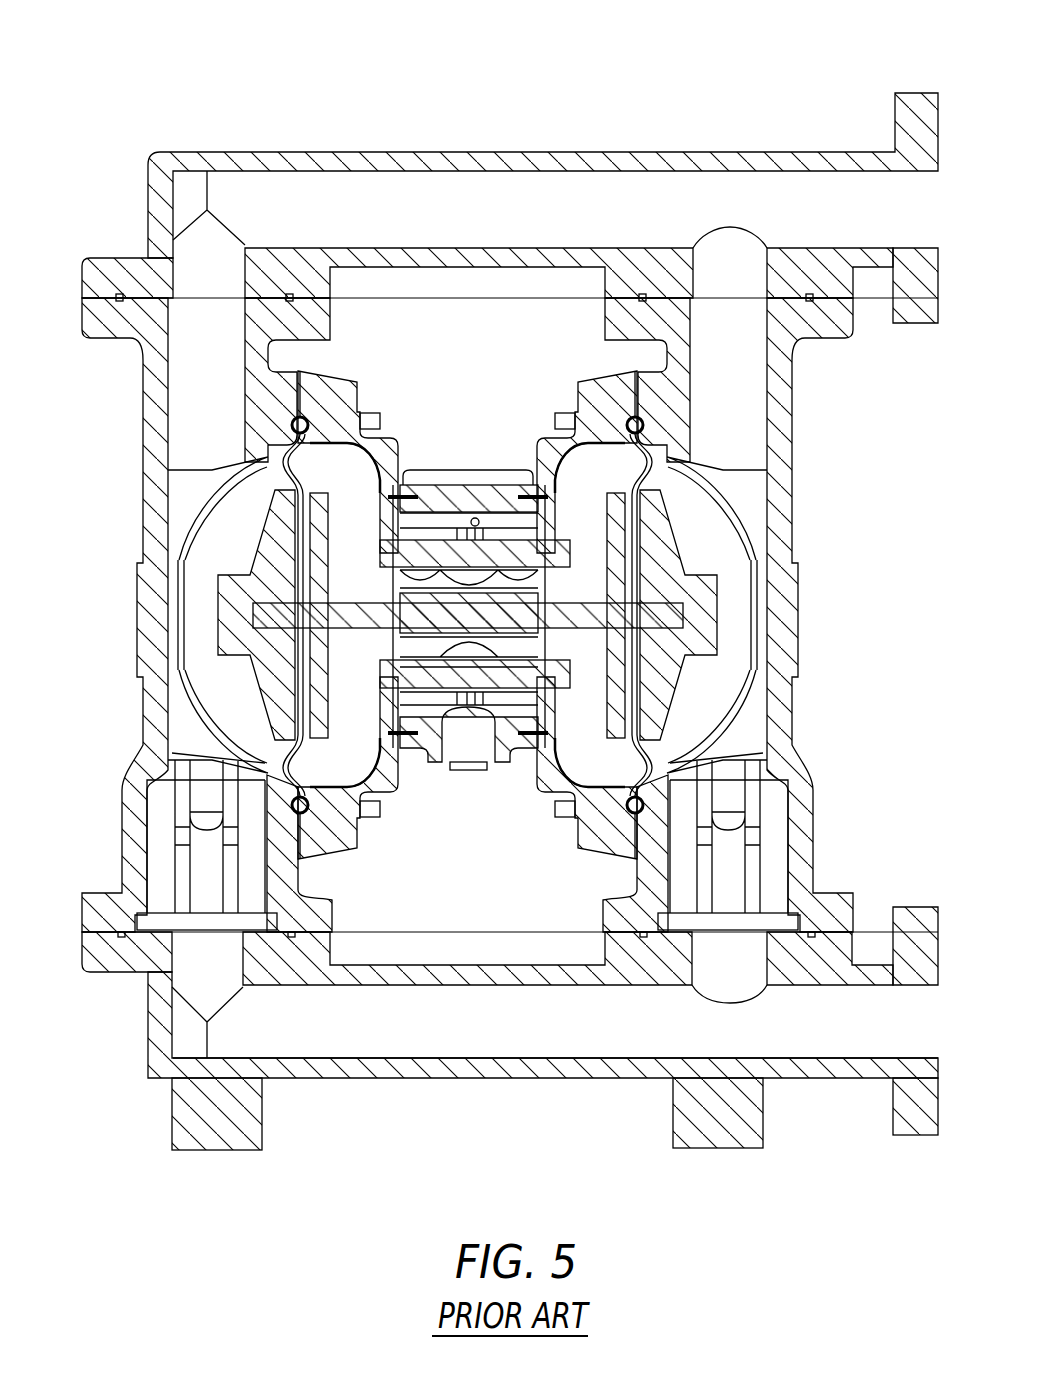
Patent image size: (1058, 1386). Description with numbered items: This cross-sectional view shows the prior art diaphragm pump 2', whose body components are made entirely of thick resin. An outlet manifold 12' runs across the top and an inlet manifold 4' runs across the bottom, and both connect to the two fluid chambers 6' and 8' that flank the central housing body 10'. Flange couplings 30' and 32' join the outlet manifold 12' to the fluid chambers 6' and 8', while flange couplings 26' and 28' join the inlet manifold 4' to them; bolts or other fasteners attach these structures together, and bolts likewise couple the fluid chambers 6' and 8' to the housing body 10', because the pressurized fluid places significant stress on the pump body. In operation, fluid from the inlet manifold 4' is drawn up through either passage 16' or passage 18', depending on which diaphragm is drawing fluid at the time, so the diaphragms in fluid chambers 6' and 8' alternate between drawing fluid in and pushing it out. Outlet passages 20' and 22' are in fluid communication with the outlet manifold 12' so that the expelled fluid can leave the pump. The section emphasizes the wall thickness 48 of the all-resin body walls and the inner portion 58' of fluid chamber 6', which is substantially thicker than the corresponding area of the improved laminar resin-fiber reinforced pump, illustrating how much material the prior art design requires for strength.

The diaphragm pump 2' is at (501, 617).
The inlet manifold 4' is at (496, 1035).
The fluid chamber 6' is at (495, 732).
The fluid chamber 8' is at (722, 615).
The housing body 10' is at (468, 554).
The outlet manifold 12' is at (501, 250).
The passage 16' is at (169, 841).
The passage 18' is at (775, 841).
The outlet passage 20' is at (153, 282).
The outlet passage 22' is at (789, 329).
The flange coupling 26' is at (107, 985).
The flange coupling 28' is at (914, 915).
The flange coupling 30' is at (107, 247).
The flange coupling 32' is at (916, 311).
The wall thickness 48 is at (147, 632).
The inner portion of fluid chamber 58' is at (371, 615).